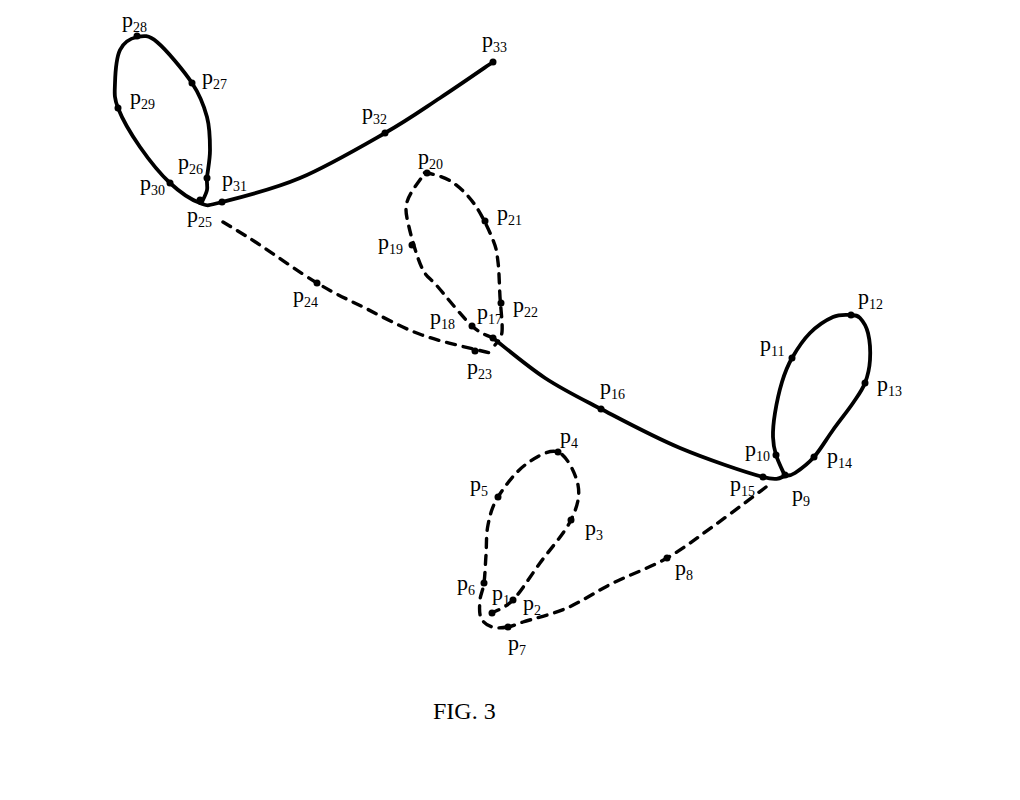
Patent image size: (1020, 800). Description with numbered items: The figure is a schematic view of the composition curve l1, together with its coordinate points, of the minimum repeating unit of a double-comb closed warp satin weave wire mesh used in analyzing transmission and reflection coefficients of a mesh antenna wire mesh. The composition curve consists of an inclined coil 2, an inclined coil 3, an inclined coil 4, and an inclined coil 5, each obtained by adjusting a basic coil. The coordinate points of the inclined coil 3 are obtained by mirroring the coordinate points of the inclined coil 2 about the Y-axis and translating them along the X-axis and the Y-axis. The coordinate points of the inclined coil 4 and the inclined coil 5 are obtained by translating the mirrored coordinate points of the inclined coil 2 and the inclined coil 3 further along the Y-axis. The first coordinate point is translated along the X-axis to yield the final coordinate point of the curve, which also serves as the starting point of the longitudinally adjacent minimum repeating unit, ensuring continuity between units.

The inclined coil 2 is at (487, 545).
The inclined coil 3 is at (781, 381).
The inclined coil 4 is at (497, 265).
The inclined coil 5 is at (142, 148).